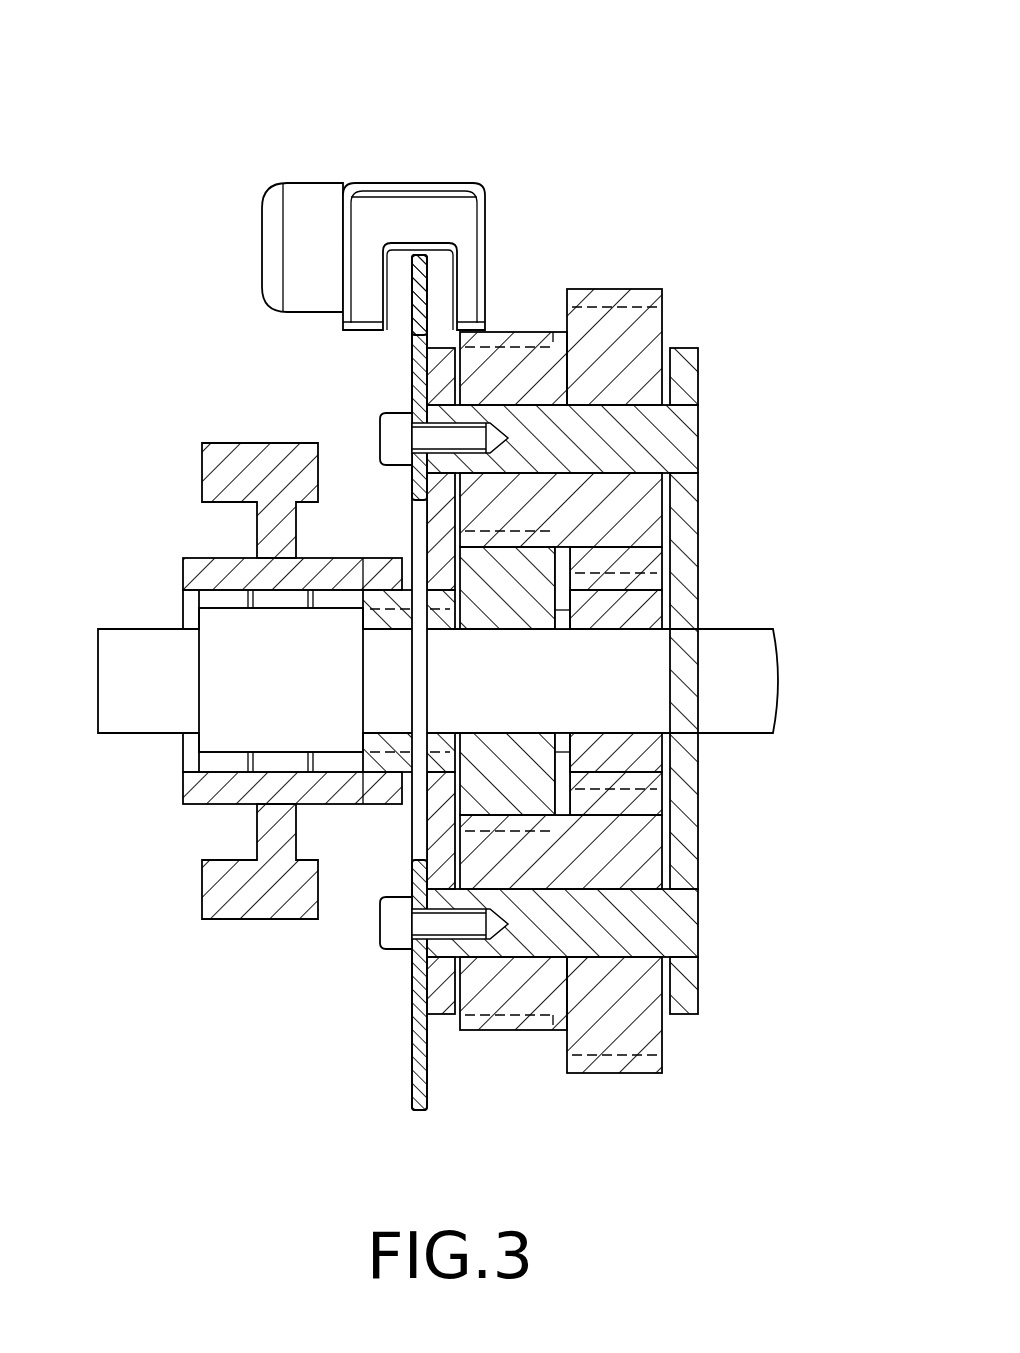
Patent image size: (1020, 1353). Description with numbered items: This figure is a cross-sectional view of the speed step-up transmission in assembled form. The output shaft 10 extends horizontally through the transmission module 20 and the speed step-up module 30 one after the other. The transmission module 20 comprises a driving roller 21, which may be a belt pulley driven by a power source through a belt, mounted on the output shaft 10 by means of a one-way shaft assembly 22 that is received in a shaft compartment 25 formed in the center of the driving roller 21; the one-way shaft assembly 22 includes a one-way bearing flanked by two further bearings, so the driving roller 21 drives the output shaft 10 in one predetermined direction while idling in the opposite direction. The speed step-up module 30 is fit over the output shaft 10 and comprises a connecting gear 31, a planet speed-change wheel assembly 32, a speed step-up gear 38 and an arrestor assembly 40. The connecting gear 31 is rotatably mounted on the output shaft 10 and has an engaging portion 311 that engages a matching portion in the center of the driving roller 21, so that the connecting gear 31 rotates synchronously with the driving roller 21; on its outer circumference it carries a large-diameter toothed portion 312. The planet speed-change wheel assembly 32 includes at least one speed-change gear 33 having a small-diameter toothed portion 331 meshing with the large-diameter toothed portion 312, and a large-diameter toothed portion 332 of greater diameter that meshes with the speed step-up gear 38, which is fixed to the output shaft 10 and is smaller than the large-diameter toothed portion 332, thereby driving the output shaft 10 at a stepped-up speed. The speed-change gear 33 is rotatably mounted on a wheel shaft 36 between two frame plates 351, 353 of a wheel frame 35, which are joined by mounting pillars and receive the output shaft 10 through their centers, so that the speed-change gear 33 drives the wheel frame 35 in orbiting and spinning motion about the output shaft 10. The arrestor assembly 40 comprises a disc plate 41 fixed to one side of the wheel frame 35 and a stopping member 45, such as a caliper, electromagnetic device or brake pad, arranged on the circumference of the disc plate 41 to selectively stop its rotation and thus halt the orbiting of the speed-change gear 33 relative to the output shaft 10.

The output shaft 10 is at (142, 720).
The transmission module 20 is at (226, 619).
The driving roller 21 is at (212, 476).
The one-way shaft assembly 22 is at (180, 604).
The shaft compartment 25 is at (185, 595).
The speed step-up module 30 is at (545, 592).
The connecting gear 31 is at (397, 682).
The engaging portion 311 is at (383, 595).
The large-diameter toothed portion 312 is at (472, 830).
The planet speed-change wheel assembly 32 is at (513, 584).
The speed-change gear 33 is at (611, 626).
The small-diameter toothed portion 331 is at (502, 333).
The large-diameter toothed portion 332 is at (616, 292).
The wheel frame 35 is at (747, 667).
The frame plate 351 is at (688, 522).
The frame plate 353 is at (430, 370).
The wheel shaft 36 is at (683, 440).
The speed step-up gear 38 is at (645, 608).
The arrestor assembly 40 is at (351, 180).
The disc plate 41 is at (420, 256).
The stopping member 45 is at (450, 205).